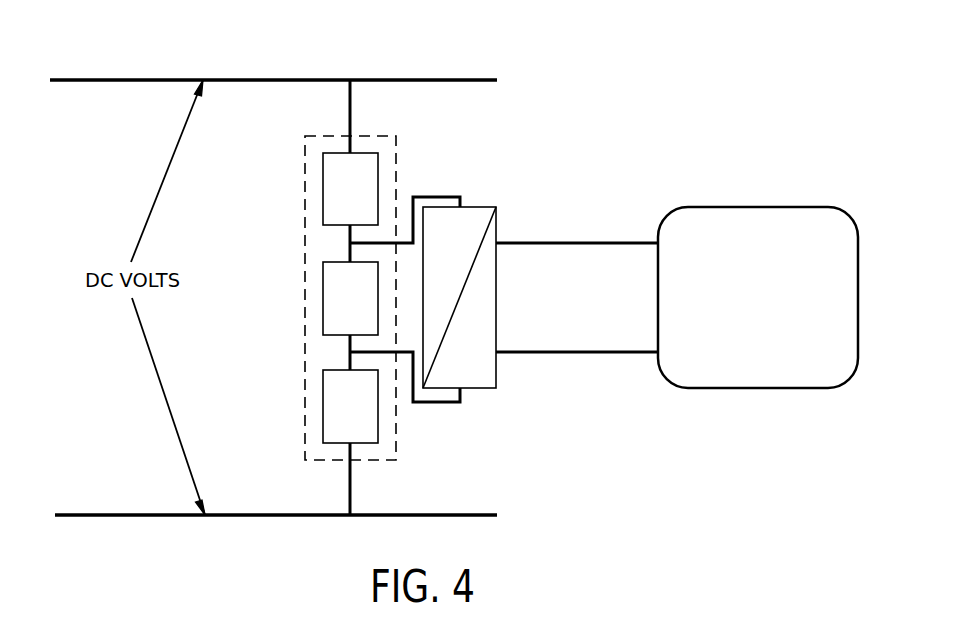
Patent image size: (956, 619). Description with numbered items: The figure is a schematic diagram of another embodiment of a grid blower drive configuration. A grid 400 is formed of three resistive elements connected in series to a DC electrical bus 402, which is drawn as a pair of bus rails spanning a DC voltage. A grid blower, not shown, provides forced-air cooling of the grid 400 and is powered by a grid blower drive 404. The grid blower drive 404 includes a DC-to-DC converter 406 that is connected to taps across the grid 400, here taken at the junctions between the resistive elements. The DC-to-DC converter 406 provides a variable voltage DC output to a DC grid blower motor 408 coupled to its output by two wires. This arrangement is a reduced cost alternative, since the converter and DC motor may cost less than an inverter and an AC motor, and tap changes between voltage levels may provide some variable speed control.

The grid 400 is at (305, 263).
The DC electrical bus 402 is at (98, 78).
The grid blower drive 404 is at (684, 122).
The DC-to-DC converter 406 is at (478, 205).
The DC grid blower motor 408 is at (757, 207).